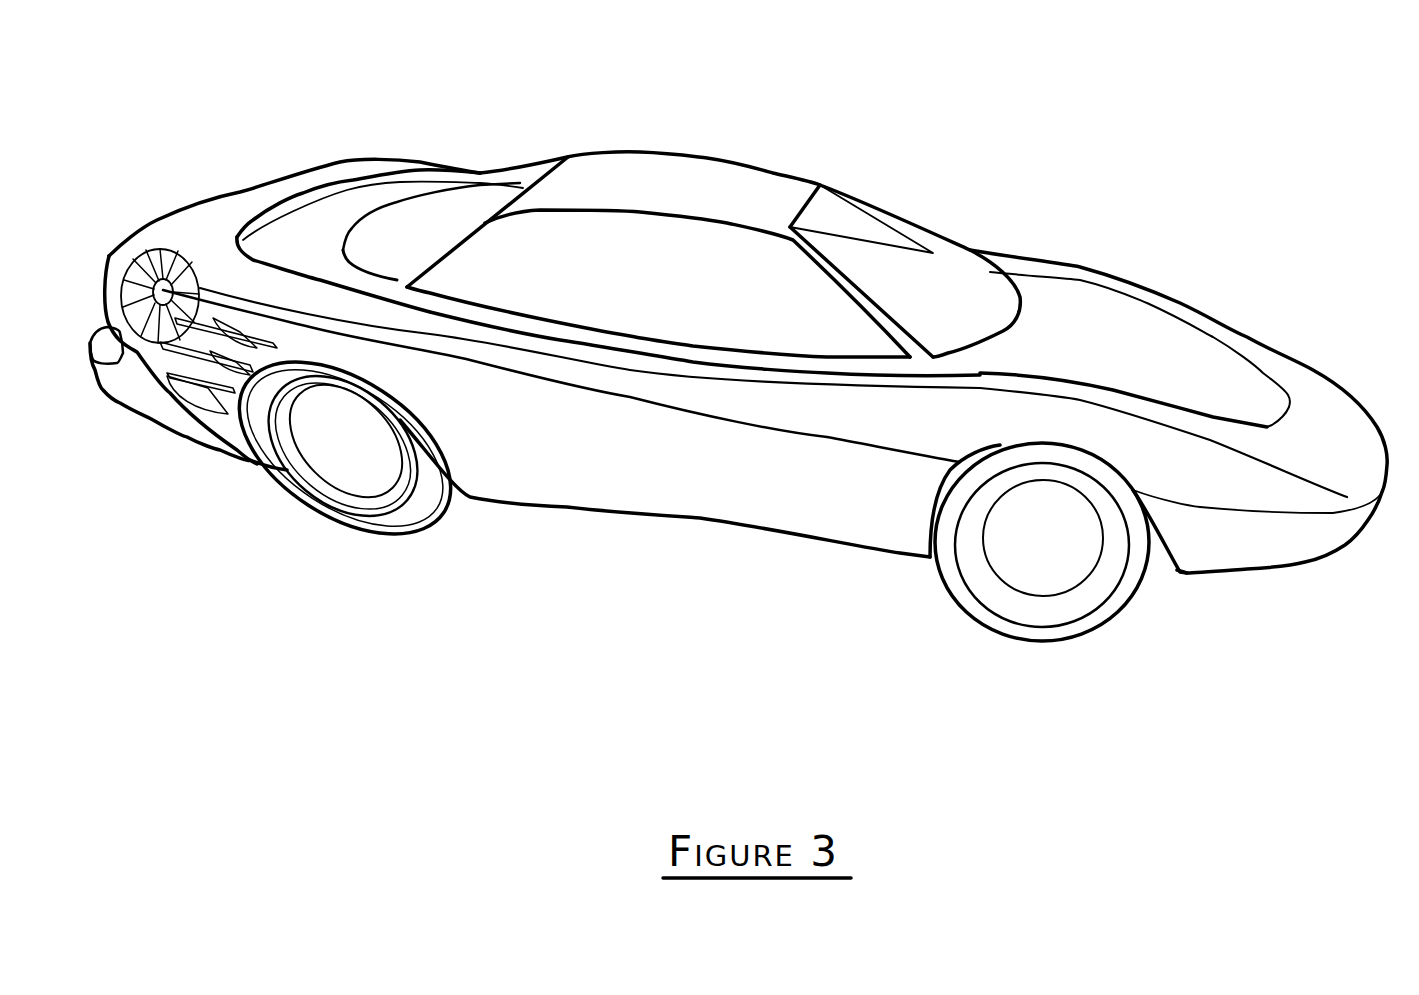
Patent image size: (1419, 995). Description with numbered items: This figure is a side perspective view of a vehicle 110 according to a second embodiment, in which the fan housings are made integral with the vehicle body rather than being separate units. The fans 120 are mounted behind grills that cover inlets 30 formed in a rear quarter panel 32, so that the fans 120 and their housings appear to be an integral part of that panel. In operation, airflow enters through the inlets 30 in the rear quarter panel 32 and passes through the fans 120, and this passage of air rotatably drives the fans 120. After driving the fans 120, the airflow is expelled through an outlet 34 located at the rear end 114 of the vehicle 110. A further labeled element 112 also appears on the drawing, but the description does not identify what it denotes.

The rear end 114 is at (266, 178).
The vehicle 110 is at (778, 158).
The rear end 112 is at (1395, 508).
The outlet 34 is at (77, 263).
The fans 120 is at (137, 352).
The inlets 30 is at (193, 390).
The rear quarter panel 32 is at (320, 350).